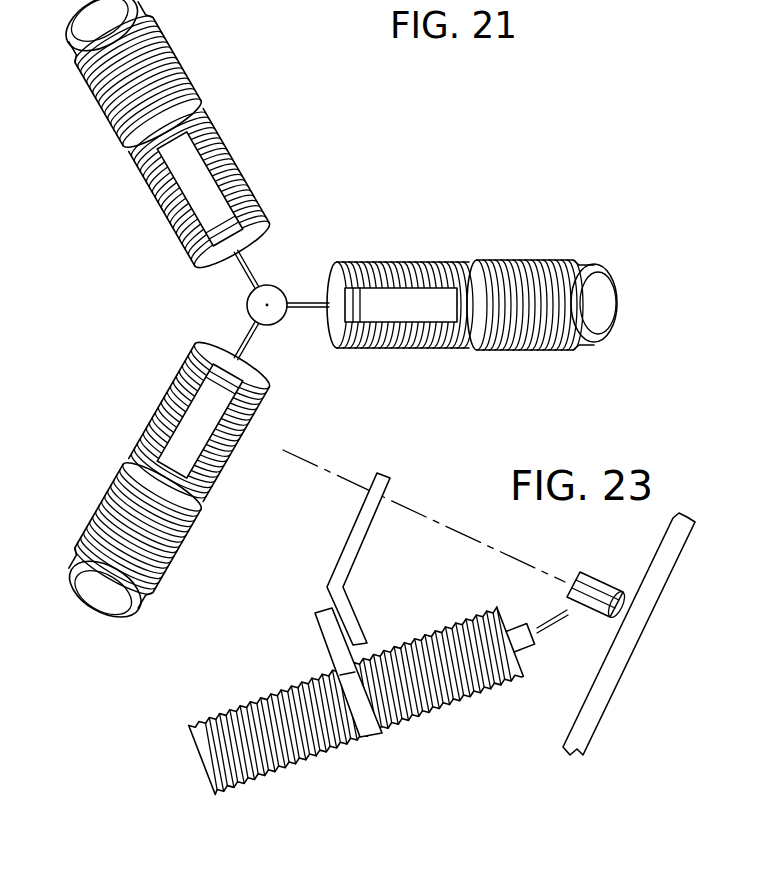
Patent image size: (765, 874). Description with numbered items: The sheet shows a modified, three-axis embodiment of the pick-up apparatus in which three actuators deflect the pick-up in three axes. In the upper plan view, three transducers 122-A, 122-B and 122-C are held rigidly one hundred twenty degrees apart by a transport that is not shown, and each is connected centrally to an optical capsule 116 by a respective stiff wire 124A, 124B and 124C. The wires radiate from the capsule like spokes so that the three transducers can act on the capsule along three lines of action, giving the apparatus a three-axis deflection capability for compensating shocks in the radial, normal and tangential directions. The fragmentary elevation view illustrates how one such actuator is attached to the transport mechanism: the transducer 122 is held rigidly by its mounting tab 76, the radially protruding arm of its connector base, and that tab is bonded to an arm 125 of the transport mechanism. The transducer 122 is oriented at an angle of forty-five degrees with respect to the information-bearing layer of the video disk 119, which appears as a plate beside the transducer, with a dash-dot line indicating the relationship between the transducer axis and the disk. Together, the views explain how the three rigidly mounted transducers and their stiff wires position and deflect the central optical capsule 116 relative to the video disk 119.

In FIG. 21, the optical capsule 116 is at (284, 288).
In FIG. 23, the optical capsule 116 is at (588, 573).
In FIG. 23, the video disk 119 is at (650, 567).
In FIG. 23, the transducer 122 is at (312, 756).
In FIG. 21, the transducer 122-A is at (443, 261).
In FIG. 21, the transducer 122-B is at (184, 84).
In FIG. 21, the transducer 122-C is at (120, 466).
In FIG. 21, the stiff wire 124A is at (309, 303).
In FIG. 21, the stiff wire 124B is at (240, 276).
In FIG. 21, the stiff wire 124C is at (250, 340).
In FIG. 23, the arm 125 is at (339, 553).
In FIG. 23, the mounting tab 76 is at (315, 637).